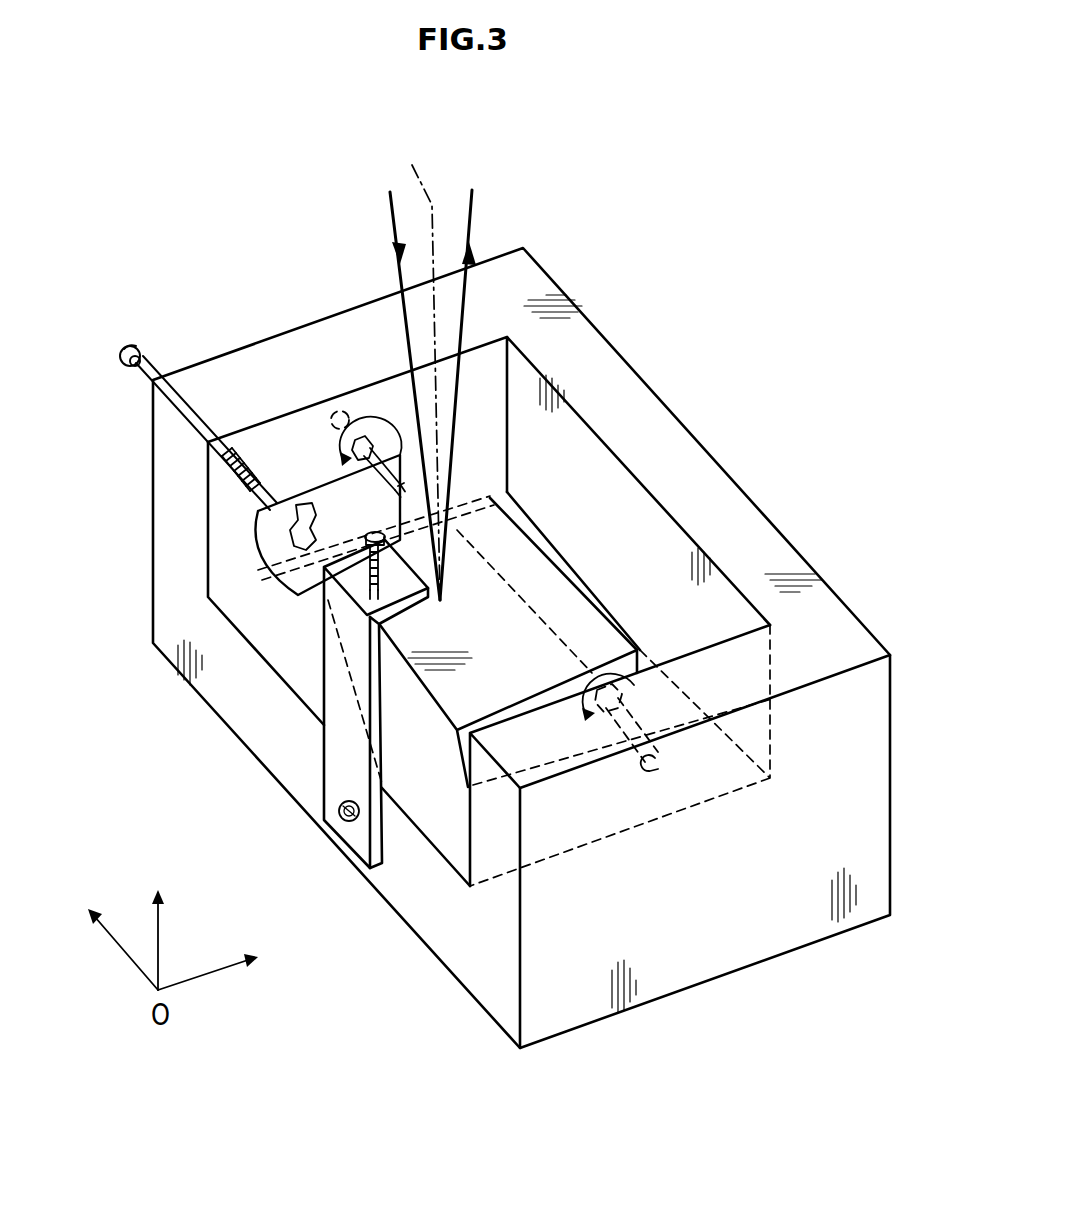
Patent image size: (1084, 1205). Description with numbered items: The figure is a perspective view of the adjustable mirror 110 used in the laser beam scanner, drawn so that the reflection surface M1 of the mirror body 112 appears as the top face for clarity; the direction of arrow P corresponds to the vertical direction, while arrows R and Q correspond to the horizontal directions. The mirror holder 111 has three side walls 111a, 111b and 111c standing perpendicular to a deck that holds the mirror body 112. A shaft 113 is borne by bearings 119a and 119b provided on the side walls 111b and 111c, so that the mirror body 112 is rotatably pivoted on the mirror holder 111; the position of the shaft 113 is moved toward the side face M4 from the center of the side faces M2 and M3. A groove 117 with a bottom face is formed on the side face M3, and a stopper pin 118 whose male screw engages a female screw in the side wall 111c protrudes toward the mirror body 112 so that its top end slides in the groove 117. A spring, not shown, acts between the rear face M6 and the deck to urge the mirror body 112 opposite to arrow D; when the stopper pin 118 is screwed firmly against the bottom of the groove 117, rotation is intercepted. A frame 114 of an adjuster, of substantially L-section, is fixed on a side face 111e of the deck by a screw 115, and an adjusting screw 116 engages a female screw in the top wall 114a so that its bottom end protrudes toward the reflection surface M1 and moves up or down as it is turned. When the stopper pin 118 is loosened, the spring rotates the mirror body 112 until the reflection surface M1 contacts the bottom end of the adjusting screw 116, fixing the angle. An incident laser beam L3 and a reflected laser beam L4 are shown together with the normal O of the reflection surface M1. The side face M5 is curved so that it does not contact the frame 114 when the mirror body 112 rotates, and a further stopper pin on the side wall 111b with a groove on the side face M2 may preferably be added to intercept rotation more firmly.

The adjustable mirror 110 is at (618, 332).
The mirror holder 111 is at (647, 413).
The side wall 111a is at (655, 537).
The side wall 111b is at (705, 920).
The side wall 111c is at (213, 583).
The side face of the deck 111e is at (478, 960).
The mirror body 112 is at (236, 446).
The shaft 113 is at (398, 425).
The frame 114 is at (338, 725).
The top wall 114a is at (268, 585).
The screw 115 is at (340, 817).
The adjusting screw 116 is at (300, 563).
The groove 117 is at (273, 520).
The stopper pin 118 is at (123, 367).
The bearing 119a is at (660, 764).
The bearing 119b is at (340, 490).
The reflection surface M1 is at (478, 596).
The side face M2 is at (541, 745).
The side face M3 is at (332, 500).
The side face M4 is at (568, 623).
The side face M5 is at (435, 728).
The rear face M6 is at (495, 792).
The arrow D is at (400, 412).
The incident laser beam L3 is at (391, 201).
The reflected laser beam L4 is at (474, 208).
The normal O is at (421, 362).
The arrow P is at (113, 936).
The arrow Q is at (224, 961).
The arrow R is at (160, 919).